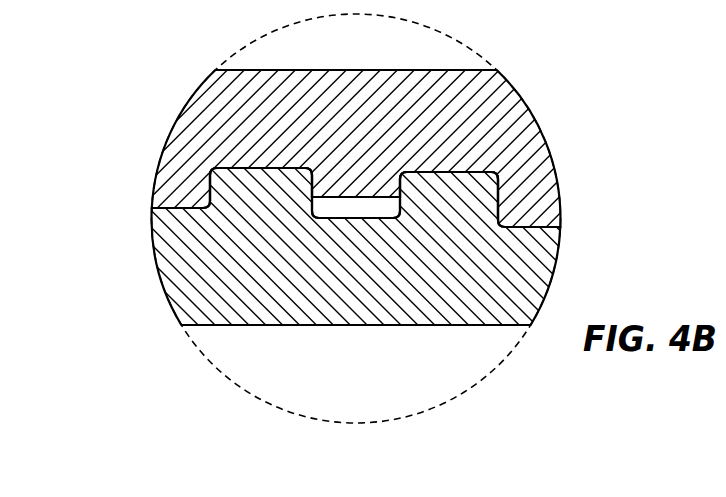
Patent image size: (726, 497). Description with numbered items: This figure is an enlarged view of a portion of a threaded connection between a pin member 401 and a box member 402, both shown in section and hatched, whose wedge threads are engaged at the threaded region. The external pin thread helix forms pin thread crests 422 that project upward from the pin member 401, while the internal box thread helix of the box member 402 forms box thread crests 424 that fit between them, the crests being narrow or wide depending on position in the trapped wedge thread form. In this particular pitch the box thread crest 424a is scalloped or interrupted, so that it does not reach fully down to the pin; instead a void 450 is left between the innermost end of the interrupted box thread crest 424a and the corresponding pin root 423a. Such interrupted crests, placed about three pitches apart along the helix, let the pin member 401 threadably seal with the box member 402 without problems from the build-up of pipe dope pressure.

The pin member 401 is at (247, 292).
The box member 402 is at (354, 118).
The pin thread crest 422 is at (284, 168).
The box thread crest 424 is at (173, 209).
The interrupted box thread crest 424a is at (363, 197).
The pin root 423a is at (358, 218).
The void 450 is at (380, 210).